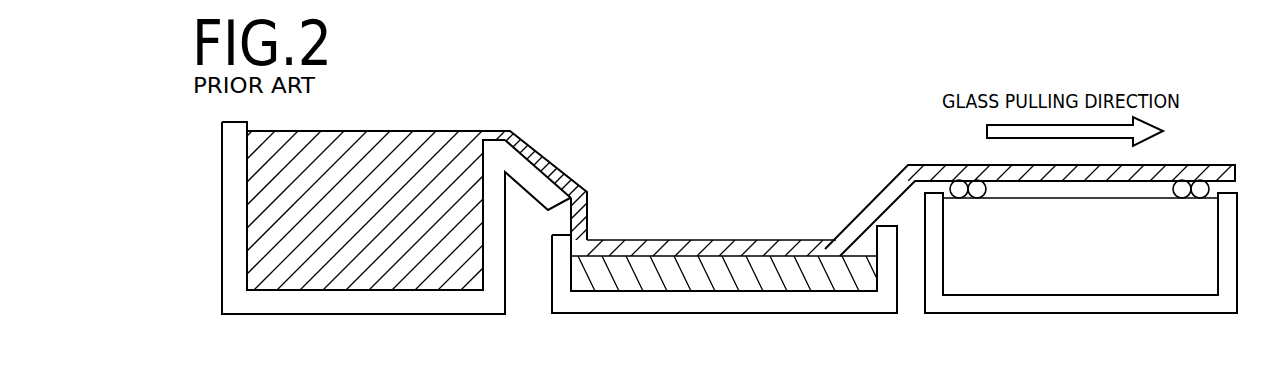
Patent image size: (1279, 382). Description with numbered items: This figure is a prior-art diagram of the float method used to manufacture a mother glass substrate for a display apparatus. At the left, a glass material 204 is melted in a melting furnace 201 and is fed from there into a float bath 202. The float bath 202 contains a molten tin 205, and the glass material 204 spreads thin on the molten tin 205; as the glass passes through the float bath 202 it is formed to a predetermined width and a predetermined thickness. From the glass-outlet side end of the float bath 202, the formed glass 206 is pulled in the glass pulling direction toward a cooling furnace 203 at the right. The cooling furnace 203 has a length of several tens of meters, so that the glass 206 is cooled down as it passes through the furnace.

The melting furnace 201 is at (375, 300).
The float bath 202 is at (678, 303).
The cooling furnace 203 is at (1067, 302).
The glass material 204 is at (342, 143).
The molten tin 205 is at (785, 275).
The glass 206 is at (1170, 163).